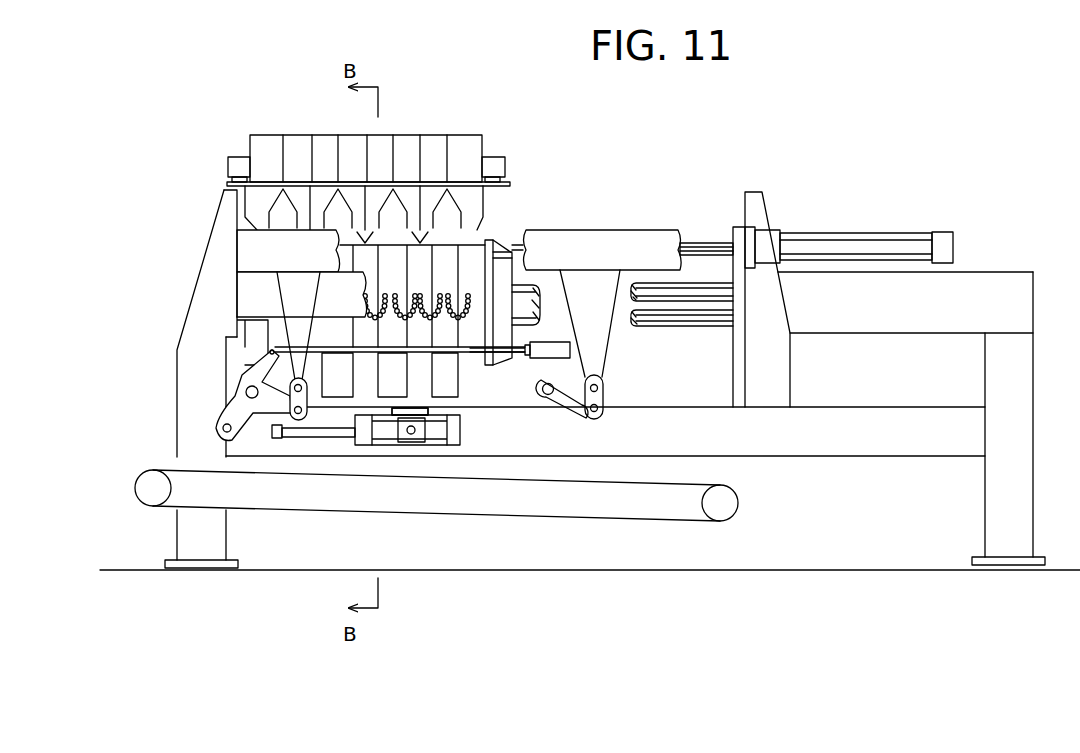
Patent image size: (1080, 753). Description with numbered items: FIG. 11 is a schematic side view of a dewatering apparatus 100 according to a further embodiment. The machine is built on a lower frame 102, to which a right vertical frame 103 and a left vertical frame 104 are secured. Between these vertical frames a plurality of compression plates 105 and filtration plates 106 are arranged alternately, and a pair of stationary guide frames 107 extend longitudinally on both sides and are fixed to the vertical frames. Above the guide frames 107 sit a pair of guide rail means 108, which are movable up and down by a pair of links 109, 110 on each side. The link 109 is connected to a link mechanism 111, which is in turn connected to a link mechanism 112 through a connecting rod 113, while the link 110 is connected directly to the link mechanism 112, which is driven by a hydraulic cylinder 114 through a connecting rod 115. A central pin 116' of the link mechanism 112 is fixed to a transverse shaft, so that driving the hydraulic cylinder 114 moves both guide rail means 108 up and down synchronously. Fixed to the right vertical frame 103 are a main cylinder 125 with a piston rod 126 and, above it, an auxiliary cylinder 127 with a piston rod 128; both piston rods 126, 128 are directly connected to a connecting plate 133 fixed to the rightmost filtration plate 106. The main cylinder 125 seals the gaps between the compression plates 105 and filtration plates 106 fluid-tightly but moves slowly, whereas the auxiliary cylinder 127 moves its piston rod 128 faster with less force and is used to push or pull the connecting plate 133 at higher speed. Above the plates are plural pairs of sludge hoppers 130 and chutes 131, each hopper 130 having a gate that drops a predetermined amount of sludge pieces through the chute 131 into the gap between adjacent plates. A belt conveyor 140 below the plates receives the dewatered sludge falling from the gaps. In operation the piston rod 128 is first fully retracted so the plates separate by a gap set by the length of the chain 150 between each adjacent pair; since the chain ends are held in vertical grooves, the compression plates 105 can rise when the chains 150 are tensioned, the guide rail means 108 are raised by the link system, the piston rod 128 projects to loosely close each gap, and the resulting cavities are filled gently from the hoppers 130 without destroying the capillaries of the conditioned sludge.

The dewatering apparatus 100 is at (957, 170).
The lower frame 102 is at (817, 457).
The right vertical frame 103 is at (752, 192).
The left vertical frame 104 is at (237, 196).
The compression plates 105 is at (454, 400).
The filtration plates 106 is at (462, 370).
The stationary guide frames 107 is at (253, 290).
The guide rail means 108 is at (252, 242).
The link 109 is at (607, 368).
The link 110 is at (252, 334).
The link mechanism 111 is at (566, 424).
The link mechanism 112 is at (216, 408).
The connecting rod 113 is at (520, 357).
The hydraulic cylinder 114 is at (437, 446).
The connecting rod 115 is at (286, 438).
The central pin 116' is at (215, 395).
The main cylinder 125 is at (1000, 272).
The piston rod 126 is at (680, 323).
The auxiliary cylinder 127 is at (848, 233).
The piston rod 128 is at (698, 243).
The sludge hoppers 130 is at (485, 147).
The chutes 131 is at (484, 203).
The connecting plate 133 is at (486, 230).
The belt conveyor 140 is at (642, 522).
The chain 150 is at (474, 313).